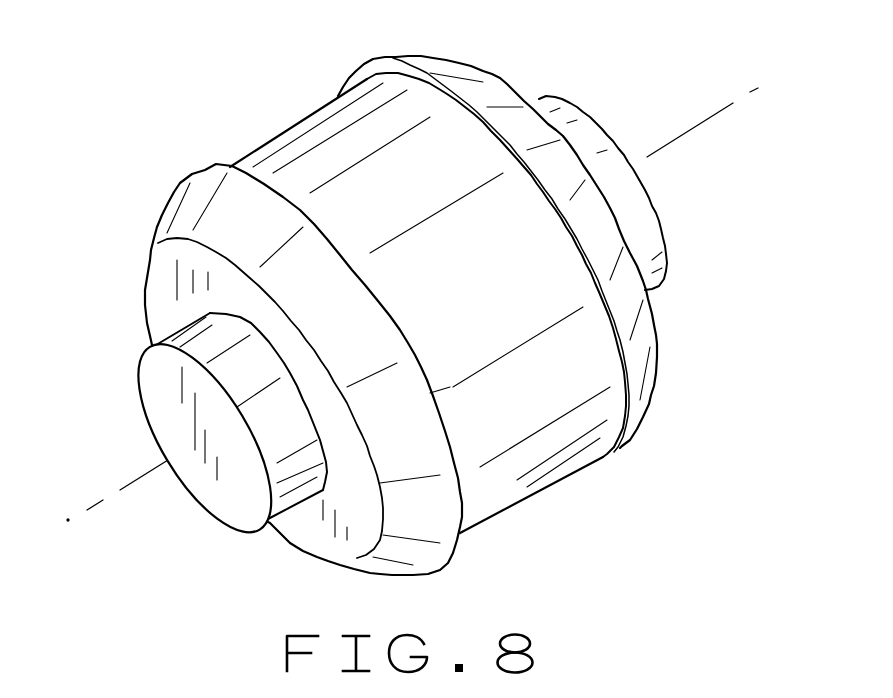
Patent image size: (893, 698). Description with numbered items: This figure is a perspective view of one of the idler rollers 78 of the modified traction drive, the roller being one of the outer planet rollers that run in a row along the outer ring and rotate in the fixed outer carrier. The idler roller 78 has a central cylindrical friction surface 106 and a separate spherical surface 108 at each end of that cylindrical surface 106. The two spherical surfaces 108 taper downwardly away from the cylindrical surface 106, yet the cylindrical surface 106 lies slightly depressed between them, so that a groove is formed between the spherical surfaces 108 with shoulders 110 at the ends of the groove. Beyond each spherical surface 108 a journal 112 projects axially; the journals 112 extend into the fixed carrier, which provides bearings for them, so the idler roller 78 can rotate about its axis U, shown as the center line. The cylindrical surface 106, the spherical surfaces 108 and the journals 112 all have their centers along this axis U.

The idler roller 78 is at (412, 303).
The cylindrical friction surface 106 is at (537, 460).
The spherical surface 108 is at (185, 208).
The shoulder 110 is at (350, 72).
The journal 112 is at (168, 385).